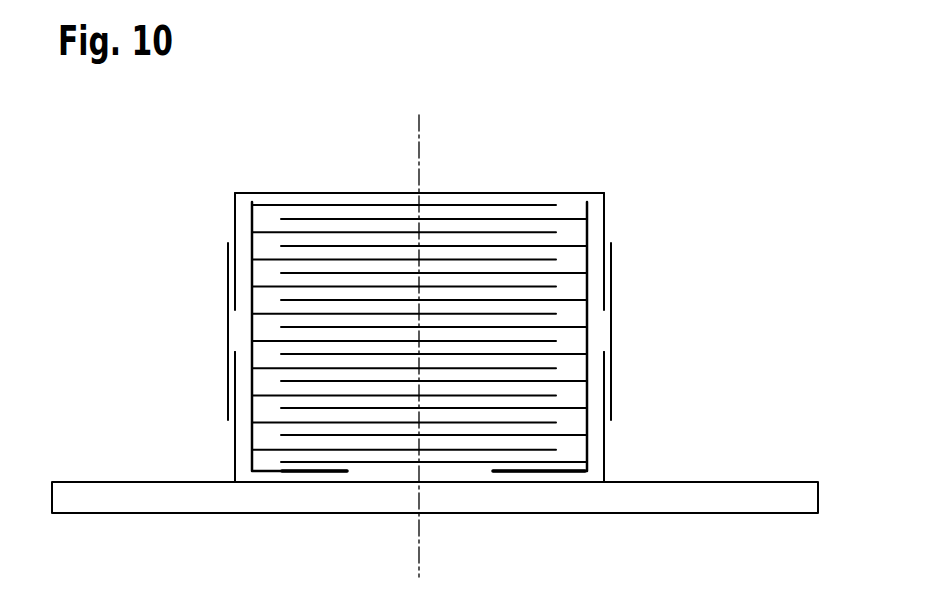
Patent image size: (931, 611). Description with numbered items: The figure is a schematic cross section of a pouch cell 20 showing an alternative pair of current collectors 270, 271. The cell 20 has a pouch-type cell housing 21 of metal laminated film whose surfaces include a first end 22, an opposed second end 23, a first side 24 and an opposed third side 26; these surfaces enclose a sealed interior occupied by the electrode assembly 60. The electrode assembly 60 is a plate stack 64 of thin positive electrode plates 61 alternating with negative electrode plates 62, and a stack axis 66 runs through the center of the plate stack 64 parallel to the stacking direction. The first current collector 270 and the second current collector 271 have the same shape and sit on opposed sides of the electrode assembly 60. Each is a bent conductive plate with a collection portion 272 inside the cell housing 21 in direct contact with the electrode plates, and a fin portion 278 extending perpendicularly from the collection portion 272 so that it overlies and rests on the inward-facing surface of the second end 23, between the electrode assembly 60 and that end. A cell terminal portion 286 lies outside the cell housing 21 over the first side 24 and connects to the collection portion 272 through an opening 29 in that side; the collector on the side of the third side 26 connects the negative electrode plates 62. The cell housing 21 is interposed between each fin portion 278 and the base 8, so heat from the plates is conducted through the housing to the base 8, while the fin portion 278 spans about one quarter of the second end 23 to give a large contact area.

The base 8 is at (755, 507).
The cell 20 is at (335, 193).
The cell housing 21 is at (335, 193).
The first end 22 is at (266, 193).
The second end 23 is at (389, 483).
The first side 24 is at (235, 455).
The third side 26 is at (604, 465).
The opening 29 is at (235, 356).
The electrode assembly 60 is at (556, 192).
The plate stack 64 is at (556, 192).
The positive electrode plates 61 is at (265, 287).
The negative electrode plates 62 is at (570, 218).
The stack axis 66 is at (427, 152).
The first current collector 270 is at (220, 192).
The second current collector 271 is at (608, 197).
The collection portion 272 is at (252, 218).
The fin portion 278 is at (291, 473).
The cell terminal portion 286 is at (228, 387).